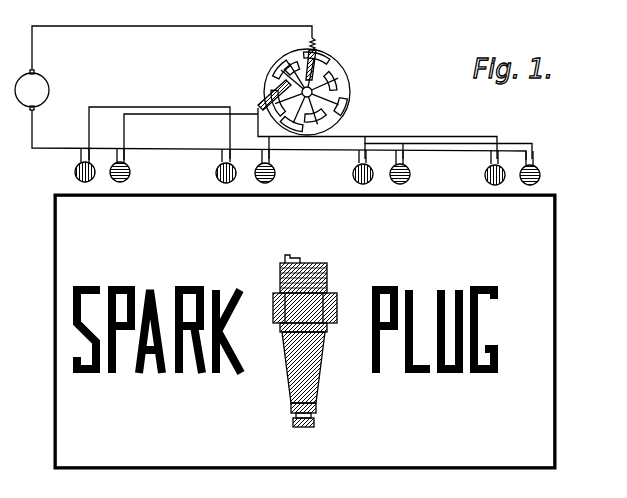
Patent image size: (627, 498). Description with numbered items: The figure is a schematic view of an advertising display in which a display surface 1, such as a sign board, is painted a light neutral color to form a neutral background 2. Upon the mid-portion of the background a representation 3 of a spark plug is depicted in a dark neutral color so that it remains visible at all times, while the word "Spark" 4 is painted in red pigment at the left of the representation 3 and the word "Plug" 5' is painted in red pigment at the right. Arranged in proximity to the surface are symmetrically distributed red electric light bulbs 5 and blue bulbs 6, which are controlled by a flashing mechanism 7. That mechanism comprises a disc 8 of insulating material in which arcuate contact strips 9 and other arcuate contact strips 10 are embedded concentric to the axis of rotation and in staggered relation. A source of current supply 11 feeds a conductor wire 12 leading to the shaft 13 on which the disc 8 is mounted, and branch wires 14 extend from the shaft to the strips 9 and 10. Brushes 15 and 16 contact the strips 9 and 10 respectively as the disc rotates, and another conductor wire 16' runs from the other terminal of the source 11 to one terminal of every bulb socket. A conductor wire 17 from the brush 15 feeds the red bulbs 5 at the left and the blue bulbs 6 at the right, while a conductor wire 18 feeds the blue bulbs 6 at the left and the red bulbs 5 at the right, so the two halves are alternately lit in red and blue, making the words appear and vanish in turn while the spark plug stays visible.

The display surface 1 is at (547, 251).
The neutral background 2 is at (546, 370).
The representation 3 is at (315, 358).
The word "Spark" 4 is at (179, 374).
The red electric light bulbs 5 is at (277, 168).
The word "Plug" 5' is at (449, 331).
The blue bulbs 6 is at (131, 172).
The flashing mechanism 7 is at (346, 79).
The disc 8 is at (340, 87).
The contact strips 9 is at (338, 109).
The contact strips 10 is at (324, 68).
The source of current supply 11 is at (47, 97).
The conductor wire 12 is at (207, 27).
The shaft 13 is at (320, 62).
The branch wires 14 is at (291, 60).
The brush 15 is at (270, 94).
The brush 16 is at (381, 126).
The conductor wire 16' is at (279, 135).
The conductor wire 17 is at (176, 107).
The conductor wire 18 is at (182, 114).